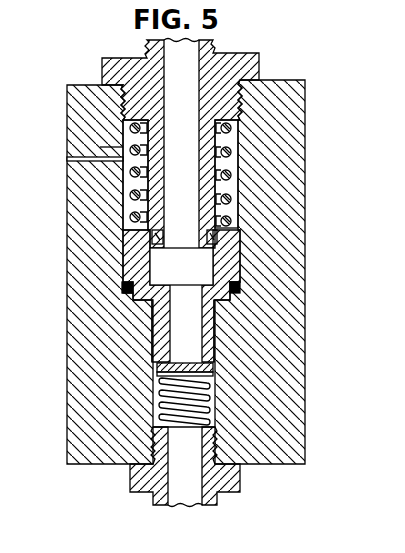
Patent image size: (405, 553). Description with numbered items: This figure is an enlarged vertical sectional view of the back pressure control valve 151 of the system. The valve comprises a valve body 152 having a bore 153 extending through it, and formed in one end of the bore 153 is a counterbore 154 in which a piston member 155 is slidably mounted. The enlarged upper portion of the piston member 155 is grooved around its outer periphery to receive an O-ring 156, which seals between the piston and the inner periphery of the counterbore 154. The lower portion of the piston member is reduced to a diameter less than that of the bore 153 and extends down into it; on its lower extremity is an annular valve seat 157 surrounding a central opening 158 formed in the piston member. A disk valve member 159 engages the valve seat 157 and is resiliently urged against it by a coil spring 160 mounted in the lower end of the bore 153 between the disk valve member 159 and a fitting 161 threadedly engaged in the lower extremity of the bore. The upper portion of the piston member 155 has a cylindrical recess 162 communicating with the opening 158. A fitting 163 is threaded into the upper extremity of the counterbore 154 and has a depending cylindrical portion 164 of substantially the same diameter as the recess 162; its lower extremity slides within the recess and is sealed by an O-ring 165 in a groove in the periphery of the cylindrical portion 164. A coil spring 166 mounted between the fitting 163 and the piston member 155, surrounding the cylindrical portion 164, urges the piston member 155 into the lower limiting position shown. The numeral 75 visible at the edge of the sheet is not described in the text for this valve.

The back pressure control valve 151 is at (303, 84).
The valve body 152 is at (280, 190).
The bore 153 is at (212, 349).
The counterbore 154 is at (133, 208).
The piston member 155 is at (236, 263).
The O-ring 156 is at (123, 288).
The annular valve seat 157 is at (157, 368).
The central opening 158 is at (152, 343).
The disk valve member 159 is at (217, 372).
The coil spring 160 is at (160, 410).
The fitting 161 is at (135, 490).
The cylindrical recess 162 is at (152, 266).
The fitting 163 is at (127, 63).
The cylindrical portion 164 is at (132, 188).
The O-ring 165 is at (245, 229).
The coil spring 166 is at (121, 147).
The passage 75 is at (9, 158).